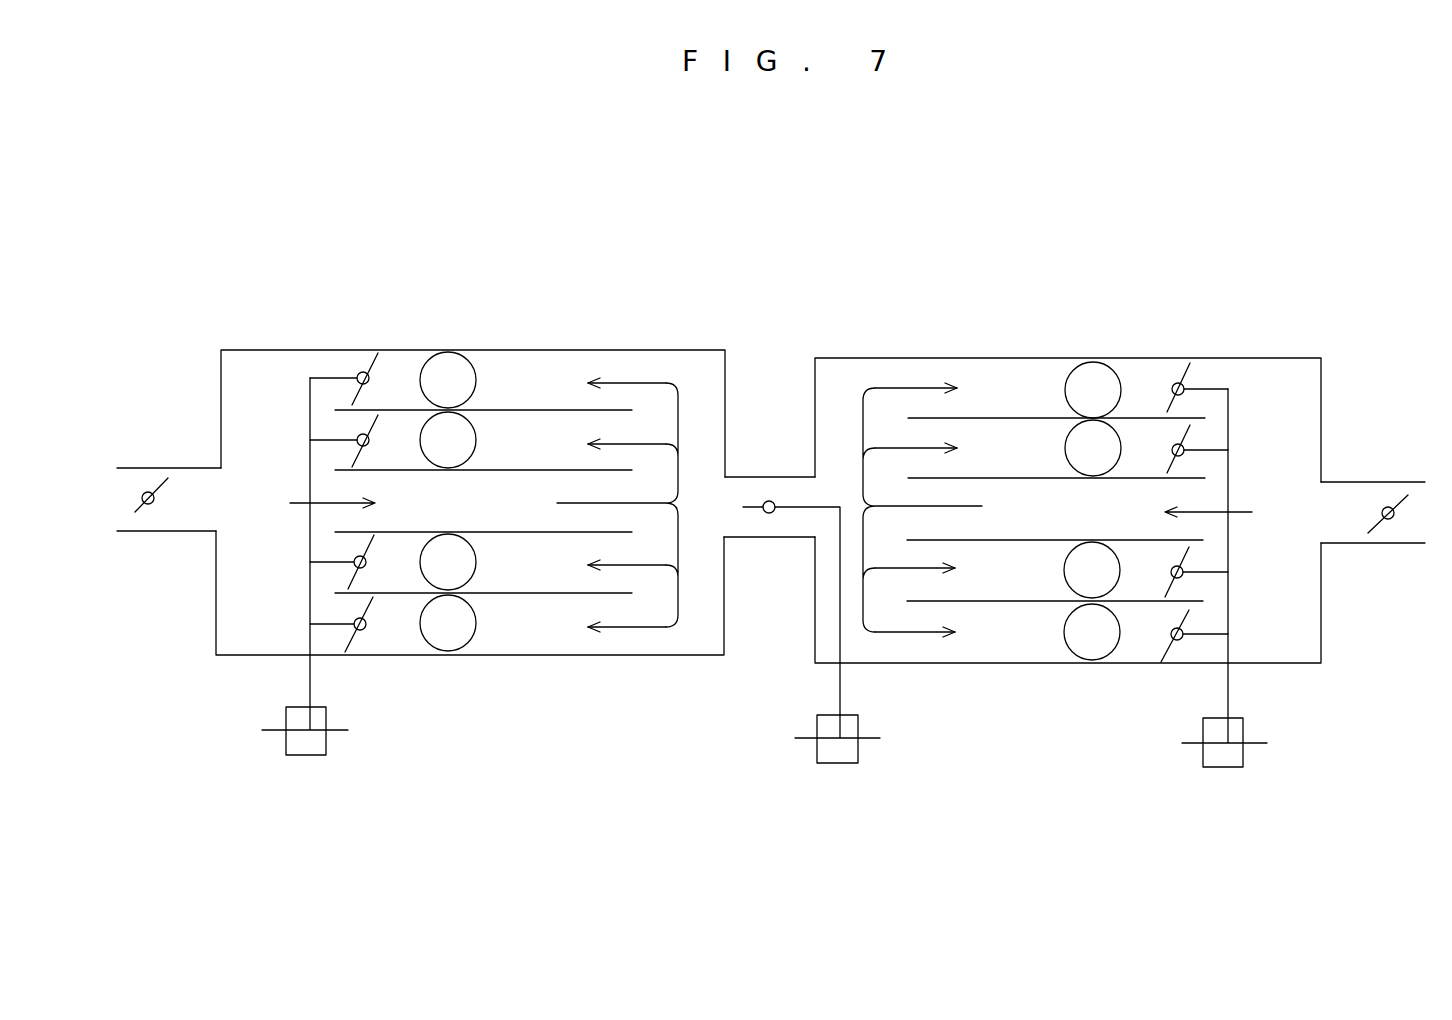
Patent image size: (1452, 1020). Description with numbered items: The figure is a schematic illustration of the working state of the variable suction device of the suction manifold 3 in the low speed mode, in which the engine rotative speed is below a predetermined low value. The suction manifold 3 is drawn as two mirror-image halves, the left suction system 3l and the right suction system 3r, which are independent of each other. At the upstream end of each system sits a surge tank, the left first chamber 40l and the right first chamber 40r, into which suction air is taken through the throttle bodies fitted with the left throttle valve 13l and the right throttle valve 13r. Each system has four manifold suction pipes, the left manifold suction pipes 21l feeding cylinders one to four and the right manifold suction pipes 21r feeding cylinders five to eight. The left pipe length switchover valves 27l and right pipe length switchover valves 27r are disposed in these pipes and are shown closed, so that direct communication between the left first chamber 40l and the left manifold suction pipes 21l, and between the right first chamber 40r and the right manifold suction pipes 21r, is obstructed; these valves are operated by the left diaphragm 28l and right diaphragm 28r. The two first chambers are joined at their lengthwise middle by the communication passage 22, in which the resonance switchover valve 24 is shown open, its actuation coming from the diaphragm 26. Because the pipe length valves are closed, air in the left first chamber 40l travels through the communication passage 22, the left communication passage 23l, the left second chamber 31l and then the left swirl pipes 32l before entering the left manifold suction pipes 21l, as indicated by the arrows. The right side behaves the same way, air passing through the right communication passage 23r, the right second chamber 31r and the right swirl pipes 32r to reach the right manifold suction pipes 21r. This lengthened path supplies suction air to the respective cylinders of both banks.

The suction manifold 3 is at (766, 292).
The left suction system 3l is at (311, 330).
The right suction system 3r is at (1228, 343).
The left throttle valve 13l is at (158, 494).
The right throttle valve 13r is at (1376, 526).
The left manifold suction pipes 21l is at (398, 377).
The right manifold suction pipes 21r is at (1147, 380).
The communication passage 22 is at (492, 527).
The left communication passage 23l is at (478, 505).
The right communication passage 23r is at (1063, 510).
The resonance switchover valve 24 is at (748, 506).
The diaphragm 26 is at (838, 765).
The left pipe length switchover valves 27l is at (367, 373).
The right pipe length switchover valves 27r is at (1183, 378).
The left diaphragm 28l is at (307, 757).
The right diaphragm 28r is at (1223, 770).
The left second chamber 31l is at (703, 417).
The right second chamber 31r is at (822, 597).
The left swirl pipes 32l is at (542, 375).
The right swirl pipes 32r is at (1011, 380).
The left first chamber 40l is at (238, 430).
The right first chamber 40r is at (1297, 436).